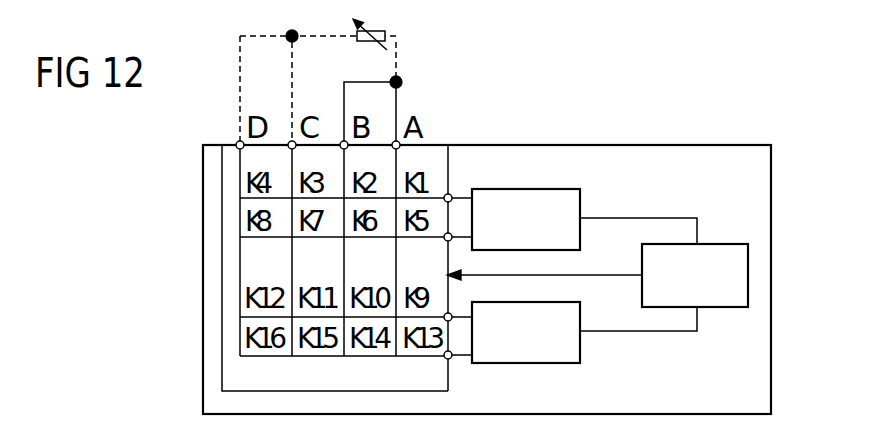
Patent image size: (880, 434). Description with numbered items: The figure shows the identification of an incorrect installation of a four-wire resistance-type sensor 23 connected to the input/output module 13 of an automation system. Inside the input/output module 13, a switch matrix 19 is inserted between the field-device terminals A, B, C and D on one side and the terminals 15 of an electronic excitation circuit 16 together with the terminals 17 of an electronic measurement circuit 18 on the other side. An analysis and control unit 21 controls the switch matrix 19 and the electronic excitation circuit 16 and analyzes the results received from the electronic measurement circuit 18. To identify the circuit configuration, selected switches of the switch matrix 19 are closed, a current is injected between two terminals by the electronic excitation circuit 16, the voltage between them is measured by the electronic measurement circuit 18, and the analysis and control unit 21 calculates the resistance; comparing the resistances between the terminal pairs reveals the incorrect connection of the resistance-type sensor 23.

The input/output module 13 is at (618, 144).
The terminals of the electronic excitation circuit 15 is at (451, 319).
The electronic excitation circuit 16 is at (517, 363).
The terminals of the electronic measurement circuit 17 is at (458, 234).
The electronic measurement circuit 18 is at (517, 189).
The switch matrix 19 is at (222, 267).
The analysis and control unit 21 is at (716, 244).
The resistance-type sensor 23 is at (376, 32).